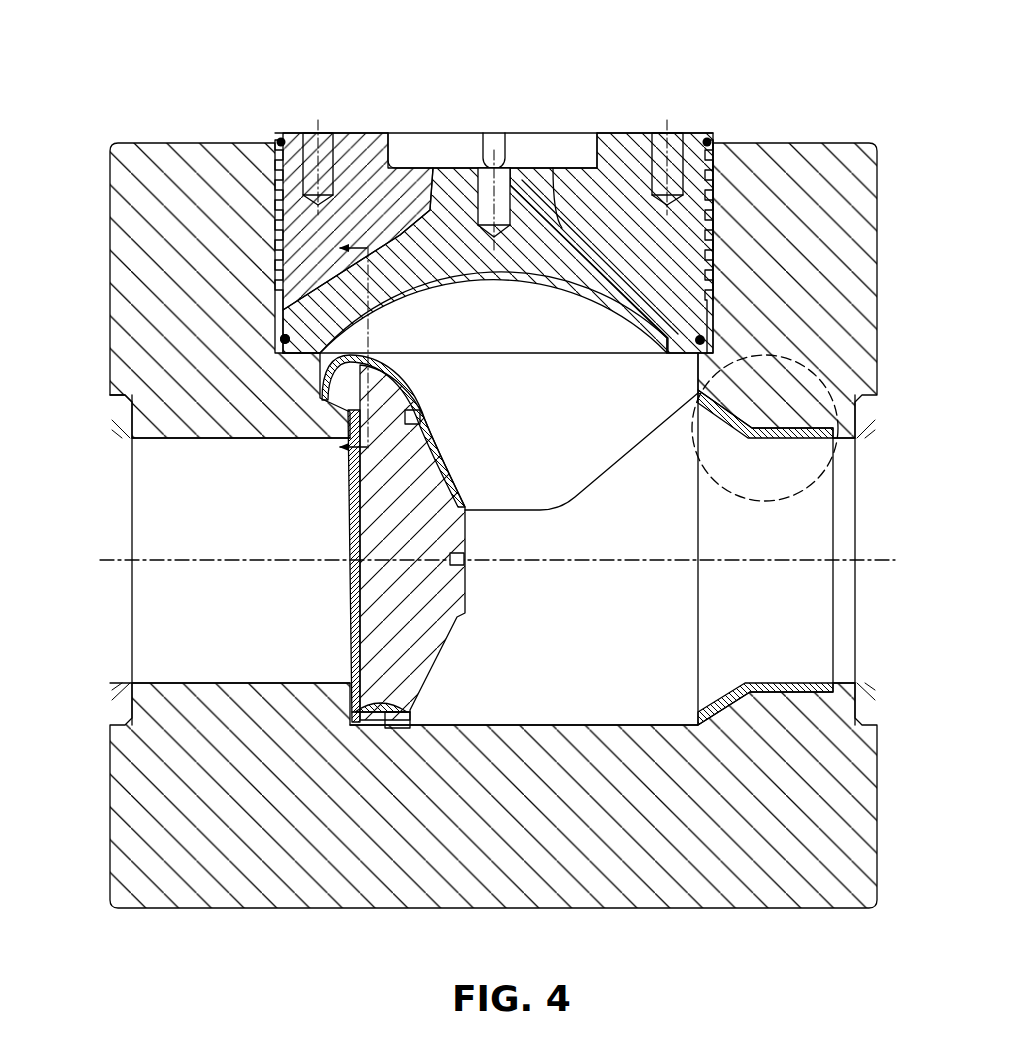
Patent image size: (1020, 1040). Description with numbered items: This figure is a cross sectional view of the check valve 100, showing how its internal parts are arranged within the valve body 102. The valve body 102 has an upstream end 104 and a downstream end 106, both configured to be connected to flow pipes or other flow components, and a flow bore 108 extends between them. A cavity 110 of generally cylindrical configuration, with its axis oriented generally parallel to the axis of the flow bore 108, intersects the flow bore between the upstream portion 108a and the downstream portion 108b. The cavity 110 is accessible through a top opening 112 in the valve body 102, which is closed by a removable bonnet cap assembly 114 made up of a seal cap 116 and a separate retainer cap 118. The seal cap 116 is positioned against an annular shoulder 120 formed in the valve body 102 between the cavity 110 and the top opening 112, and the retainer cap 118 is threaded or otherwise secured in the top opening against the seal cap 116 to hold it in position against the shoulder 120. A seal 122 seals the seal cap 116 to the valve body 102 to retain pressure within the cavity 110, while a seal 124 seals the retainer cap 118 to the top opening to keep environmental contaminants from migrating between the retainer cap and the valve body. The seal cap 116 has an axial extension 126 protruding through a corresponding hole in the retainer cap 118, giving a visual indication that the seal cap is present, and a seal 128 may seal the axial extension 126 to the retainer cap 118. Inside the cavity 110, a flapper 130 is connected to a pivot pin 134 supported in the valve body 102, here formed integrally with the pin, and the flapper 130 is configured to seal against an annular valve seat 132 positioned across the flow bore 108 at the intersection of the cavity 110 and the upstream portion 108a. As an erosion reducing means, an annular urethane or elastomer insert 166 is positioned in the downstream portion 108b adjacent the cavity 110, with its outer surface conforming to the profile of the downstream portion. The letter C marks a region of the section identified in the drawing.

The check valve 100 is at (500, 461).
The valve body 102 is at (881, 190).
The upstream end 104 is at (107, 790).
The downstream end 106 is at (878, 790).
The flow bore 108 is at (248, 550).
The upstream portion of the flow bore 108a is at (132, 683).
The downstream portion of the flow bore 108b is at (793, 604).
The cavity 110 is at (600, 722).
The top opening 112 is at (704, 182).
The bonnet cap assembly 114 is at (623, 136).
The seal cap 116 is at (510, 280).
The retainer cap 118 is at (290, 133).
The annular shoulder 120 is at (308, 350).
The seal 122 is at (283, 340).
The seal 124 is at (712, 139).
The axial extension 126 is at (557, 176).
The seal 128 is at (433, 174).
The flapper 130 is at (352, 590).
The annular valve seat 132 is at (410, 704).
The pivot pin 134 is at (352, 365).
The annular urethane or elastomer insert 166 is at (818, 440).
The ball surface C is at (688, 470).